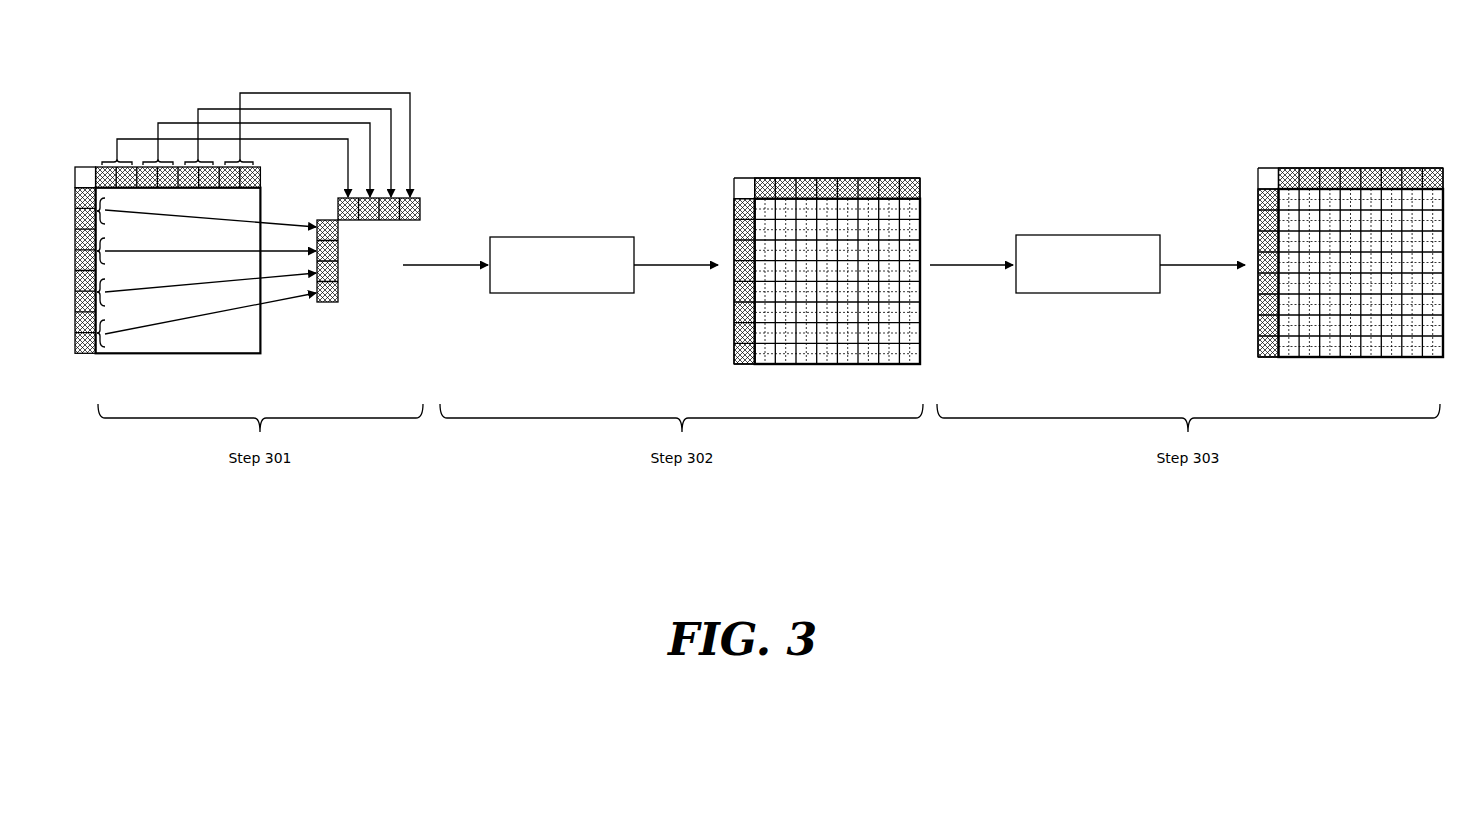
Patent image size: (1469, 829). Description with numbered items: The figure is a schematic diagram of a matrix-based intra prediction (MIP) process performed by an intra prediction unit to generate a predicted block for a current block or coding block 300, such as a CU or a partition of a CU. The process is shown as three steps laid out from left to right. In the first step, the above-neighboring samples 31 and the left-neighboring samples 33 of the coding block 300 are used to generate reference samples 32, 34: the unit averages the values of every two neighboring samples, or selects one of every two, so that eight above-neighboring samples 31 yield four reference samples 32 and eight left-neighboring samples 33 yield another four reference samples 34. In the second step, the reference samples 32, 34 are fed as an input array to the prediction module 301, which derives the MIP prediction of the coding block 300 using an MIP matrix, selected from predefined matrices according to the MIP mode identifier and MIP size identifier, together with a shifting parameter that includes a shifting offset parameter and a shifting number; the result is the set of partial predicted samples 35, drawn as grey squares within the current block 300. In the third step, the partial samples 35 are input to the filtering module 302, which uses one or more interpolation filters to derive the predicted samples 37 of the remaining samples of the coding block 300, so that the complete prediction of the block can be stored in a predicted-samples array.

The above-neighboring samples 31 is at (133, 176).
The reference samples 32 is at (422, 204).
The left-neighboring samples 33 is at (85, 318).
The reference samples 34 is at (342, 290).
The partial predicted samples 35 is at (915, 224).
The predicted samples 37 is at (1360, 212).
The coding block 300 is at (206, 272).
The prediction module 301 is at (562, 265).
The filtering module 302 is at (1088, 264).